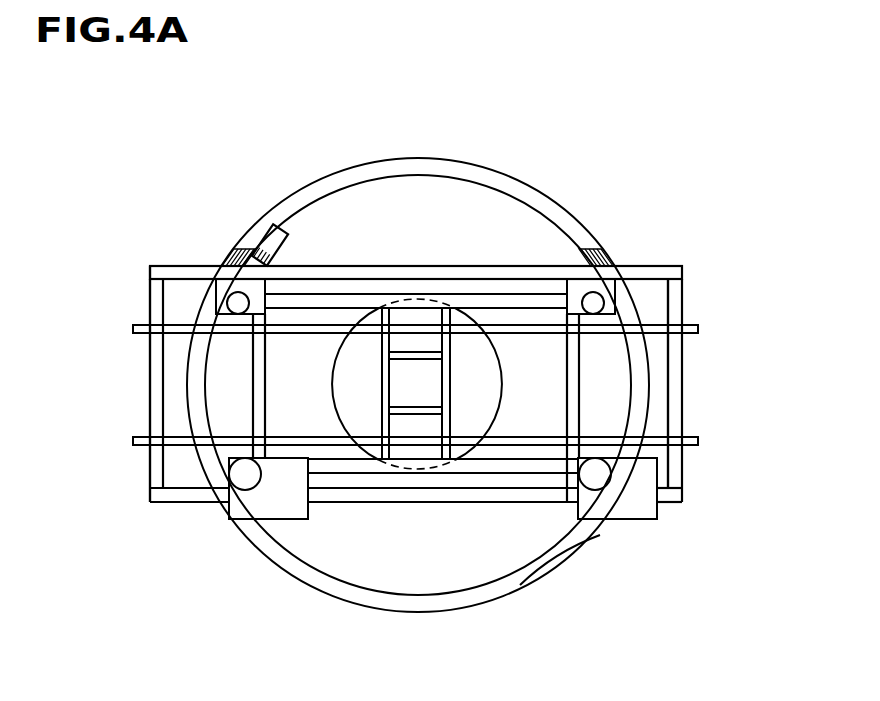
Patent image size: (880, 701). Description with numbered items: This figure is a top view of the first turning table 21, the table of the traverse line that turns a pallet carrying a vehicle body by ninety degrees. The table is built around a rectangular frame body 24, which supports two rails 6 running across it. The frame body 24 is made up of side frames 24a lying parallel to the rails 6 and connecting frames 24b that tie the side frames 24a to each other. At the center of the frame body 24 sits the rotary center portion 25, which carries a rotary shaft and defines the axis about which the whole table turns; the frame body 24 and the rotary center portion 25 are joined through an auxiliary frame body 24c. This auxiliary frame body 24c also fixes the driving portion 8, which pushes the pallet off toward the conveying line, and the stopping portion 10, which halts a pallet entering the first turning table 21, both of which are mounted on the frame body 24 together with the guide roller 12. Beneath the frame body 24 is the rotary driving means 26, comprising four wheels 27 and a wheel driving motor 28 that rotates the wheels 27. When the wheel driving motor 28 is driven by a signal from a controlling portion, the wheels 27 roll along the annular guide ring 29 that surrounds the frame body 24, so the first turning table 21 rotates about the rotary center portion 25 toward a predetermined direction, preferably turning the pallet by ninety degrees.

The rails 6 is at (142, 333).
The driving portion 8 is at (632, 510).
The stopping portion 10 is at (279, 512).
The guide roller 12 is at (236, 300).
The first turning table 21 is at (686, 135).
The frame body 24 is at (650, 267).
The side frames 24a is at (170, 266).
The connecting frames 24b is at (572, 378).
The auxiliary frame body 24c is at (477, 465).
The rotary center portion 25 is at (488, 345).
The rotary driving means 26 is at (290, 250).
The wheels 27 is at (240, 252).
The wheel driving motor 28 is at (278, 226).
The annular guide ring 29 is at (553, 550).